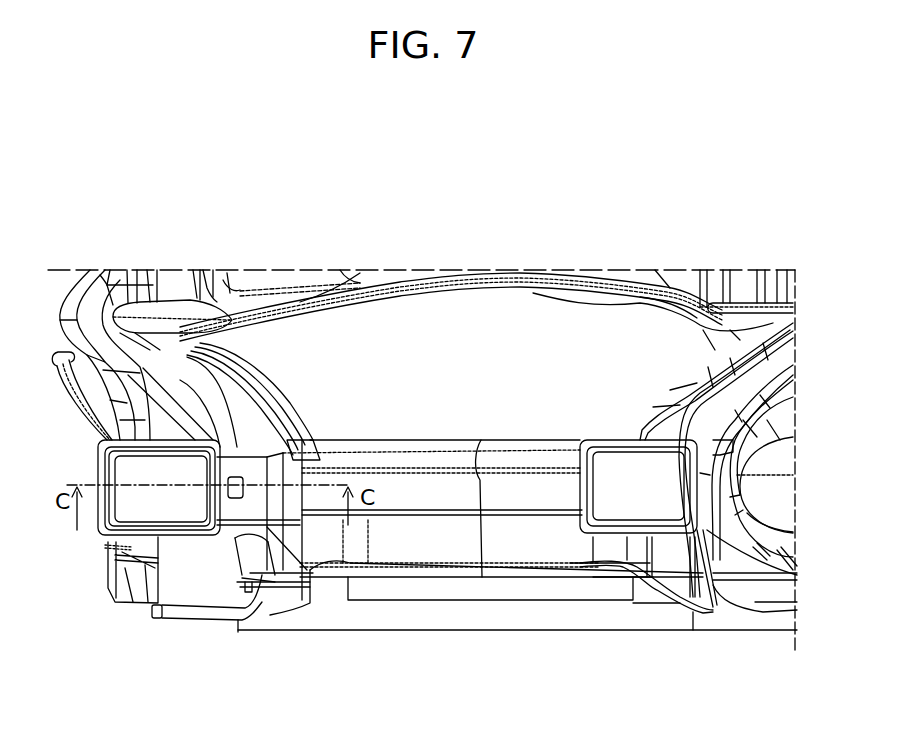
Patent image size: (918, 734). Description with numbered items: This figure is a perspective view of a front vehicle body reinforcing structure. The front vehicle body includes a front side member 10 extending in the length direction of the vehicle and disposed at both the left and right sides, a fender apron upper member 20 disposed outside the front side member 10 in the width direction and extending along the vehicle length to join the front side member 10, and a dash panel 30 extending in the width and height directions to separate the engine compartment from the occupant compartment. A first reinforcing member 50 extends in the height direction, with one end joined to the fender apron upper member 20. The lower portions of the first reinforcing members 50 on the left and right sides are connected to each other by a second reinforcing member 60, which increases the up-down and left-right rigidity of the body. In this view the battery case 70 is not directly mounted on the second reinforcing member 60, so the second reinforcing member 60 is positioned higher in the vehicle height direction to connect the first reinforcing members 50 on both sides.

The front side member 10 is at (183, 507).
The fender apron upper member 20 is at (85, 313).
The dash panel 30 is at (462, 384).
The first reinforcing member 50 is at (243, 420).
The second reinforcing member 60 is at (495, 465).
The battery case 70 is at (500, 612).